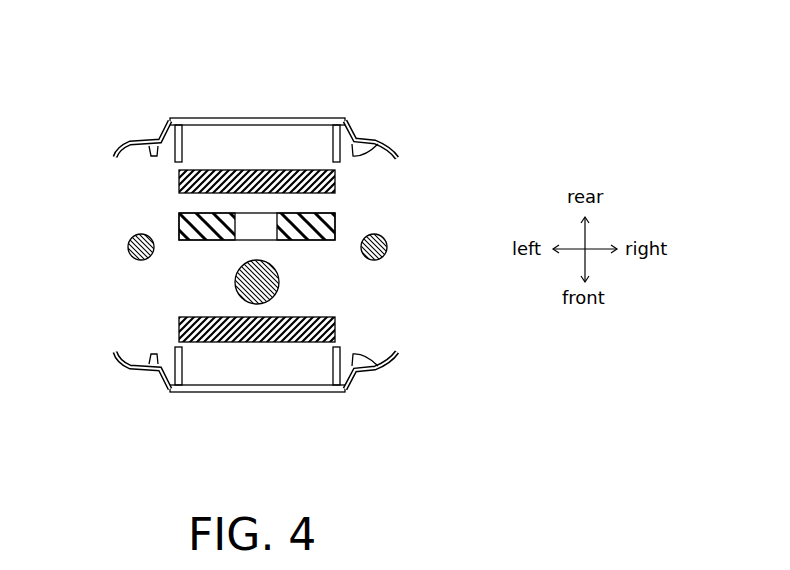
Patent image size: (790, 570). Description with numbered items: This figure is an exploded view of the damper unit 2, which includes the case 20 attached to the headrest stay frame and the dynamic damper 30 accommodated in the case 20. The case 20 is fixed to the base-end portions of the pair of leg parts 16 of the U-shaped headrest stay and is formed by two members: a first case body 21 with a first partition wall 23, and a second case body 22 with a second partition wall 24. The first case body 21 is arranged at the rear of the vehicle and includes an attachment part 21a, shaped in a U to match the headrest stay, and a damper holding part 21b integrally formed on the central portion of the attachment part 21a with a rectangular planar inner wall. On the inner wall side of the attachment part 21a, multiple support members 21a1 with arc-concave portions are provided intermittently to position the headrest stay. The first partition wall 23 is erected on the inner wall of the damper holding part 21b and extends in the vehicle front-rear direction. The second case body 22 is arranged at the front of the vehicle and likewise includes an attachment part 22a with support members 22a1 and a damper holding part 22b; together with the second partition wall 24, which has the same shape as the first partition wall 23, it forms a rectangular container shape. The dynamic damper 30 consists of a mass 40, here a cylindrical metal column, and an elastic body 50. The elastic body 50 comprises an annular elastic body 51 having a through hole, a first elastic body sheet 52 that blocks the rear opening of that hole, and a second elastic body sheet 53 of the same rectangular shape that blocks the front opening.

The damper unit 2 is at (428, 147).
The leg part 16 is at (128, 250).
The case 20 is at (379, 130).
The first case body 21 is at (247, 102).
The attachment part 21a is at (120, 115).
The support member 21a1 is at (157, 140).
The damper holding part 21b is at (220, 118).
The second case body 22 is at (232, 419).
The attachment part 22a is at (119, 405).
The support member 22a1 is at (150, 373).
The damper holding part 22b is at (228, 393).
The first partition wall 23 is at (170, 118).
The second partition wall 24 is at (163, 373).
The dynamic damper 30 is at (283, 303).
The mass 40 is at (280, 283).
The elastic body 50 is at (338, 323).
The annular elastic body 51 is at (179, 223).
The first elastic body sheet 52 is at (335, 181).
The second elastic body sheet 53 is at (178, 323).